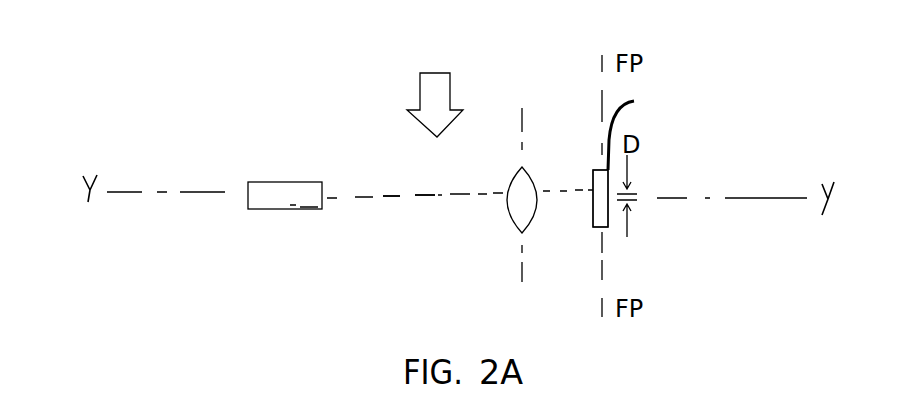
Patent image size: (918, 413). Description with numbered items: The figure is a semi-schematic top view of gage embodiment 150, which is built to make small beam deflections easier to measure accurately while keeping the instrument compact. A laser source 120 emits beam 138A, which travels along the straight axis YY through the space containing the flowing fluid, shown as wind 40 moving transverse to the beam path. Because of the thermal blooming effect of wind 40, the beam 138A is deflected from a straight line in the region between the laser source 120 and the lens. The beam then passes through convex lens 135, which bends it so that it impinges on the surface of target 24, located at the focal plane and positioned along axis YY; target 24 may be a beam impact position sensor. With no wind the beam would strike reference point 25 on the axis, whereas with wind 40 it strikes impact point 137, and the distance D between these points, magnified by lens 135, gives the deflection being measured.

The light source 120 is at (275, 182).
The gage embodiment 150 is at (259, 288).
The wind 40 is at (452, 90).
The beam 138A is at (418, 200).
The convex lens 135 is at (508, 220).
The impact point 137 is at (588, 182).
The reference point 25 is at (588, 206).
The target 24 is at (634, 101).